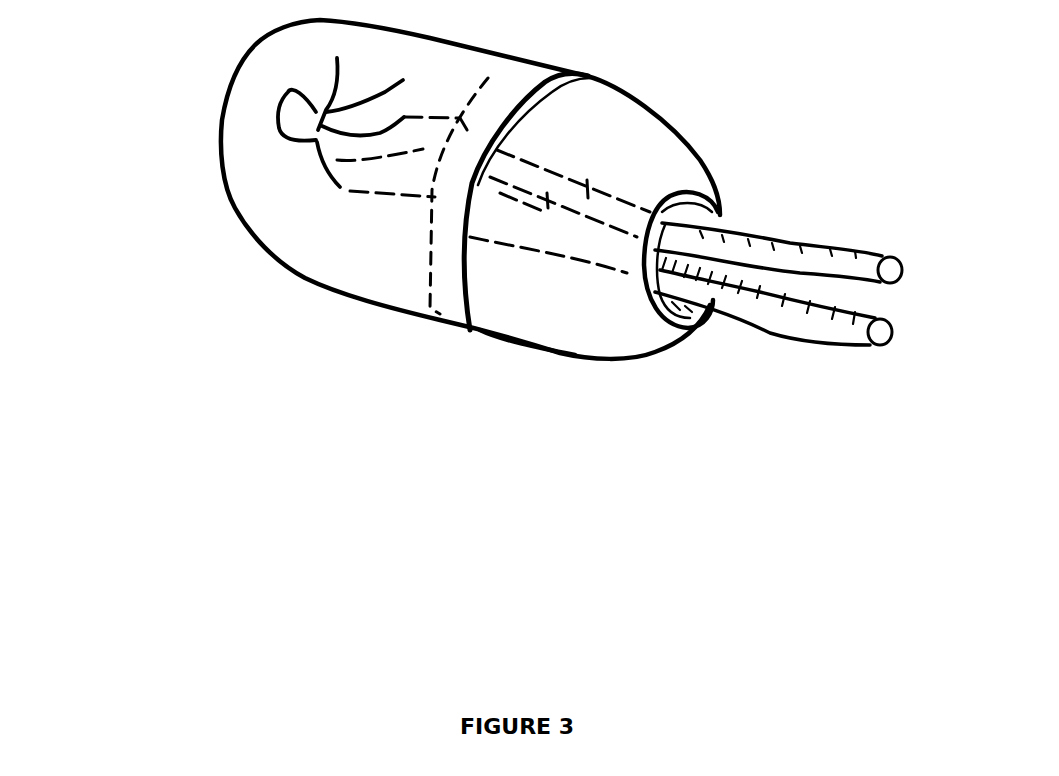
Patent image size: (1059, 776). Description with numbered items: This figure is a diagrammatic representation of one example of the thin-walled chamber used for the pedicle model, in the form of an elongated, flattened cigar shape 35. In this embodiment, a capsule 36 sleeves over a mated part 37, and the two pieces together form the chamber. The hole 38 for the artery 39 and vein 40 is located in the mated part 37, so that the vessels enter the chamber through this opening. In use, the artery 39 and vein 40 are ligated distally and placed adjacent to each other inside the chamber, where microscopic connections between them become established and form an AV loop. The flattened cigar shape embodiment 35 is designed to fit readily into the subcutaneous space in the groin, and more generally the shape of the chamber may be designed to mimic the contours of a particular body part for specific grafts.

The elongated, flattened cigar shape 35 is at (163, 14).
The capsule 36 is at (367, 260).
The mated part 37 is at (582, 366).
The hole 38 is at (708, 316).
The artery 39 is at (847, 237).
The vein 40 is at (857, 343).